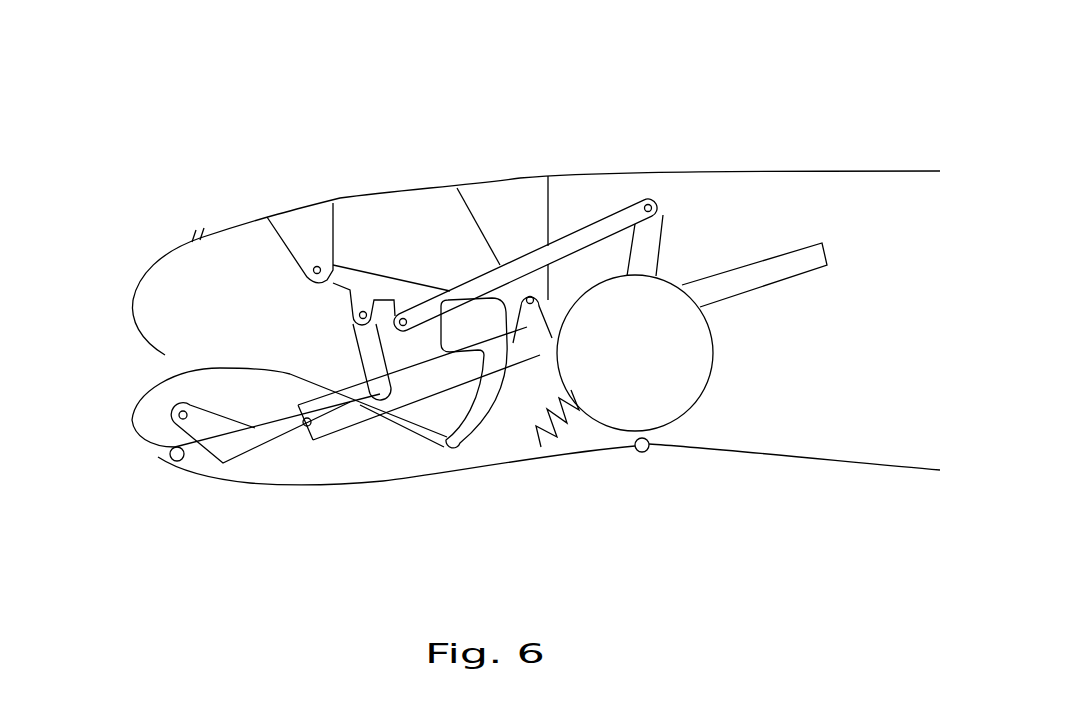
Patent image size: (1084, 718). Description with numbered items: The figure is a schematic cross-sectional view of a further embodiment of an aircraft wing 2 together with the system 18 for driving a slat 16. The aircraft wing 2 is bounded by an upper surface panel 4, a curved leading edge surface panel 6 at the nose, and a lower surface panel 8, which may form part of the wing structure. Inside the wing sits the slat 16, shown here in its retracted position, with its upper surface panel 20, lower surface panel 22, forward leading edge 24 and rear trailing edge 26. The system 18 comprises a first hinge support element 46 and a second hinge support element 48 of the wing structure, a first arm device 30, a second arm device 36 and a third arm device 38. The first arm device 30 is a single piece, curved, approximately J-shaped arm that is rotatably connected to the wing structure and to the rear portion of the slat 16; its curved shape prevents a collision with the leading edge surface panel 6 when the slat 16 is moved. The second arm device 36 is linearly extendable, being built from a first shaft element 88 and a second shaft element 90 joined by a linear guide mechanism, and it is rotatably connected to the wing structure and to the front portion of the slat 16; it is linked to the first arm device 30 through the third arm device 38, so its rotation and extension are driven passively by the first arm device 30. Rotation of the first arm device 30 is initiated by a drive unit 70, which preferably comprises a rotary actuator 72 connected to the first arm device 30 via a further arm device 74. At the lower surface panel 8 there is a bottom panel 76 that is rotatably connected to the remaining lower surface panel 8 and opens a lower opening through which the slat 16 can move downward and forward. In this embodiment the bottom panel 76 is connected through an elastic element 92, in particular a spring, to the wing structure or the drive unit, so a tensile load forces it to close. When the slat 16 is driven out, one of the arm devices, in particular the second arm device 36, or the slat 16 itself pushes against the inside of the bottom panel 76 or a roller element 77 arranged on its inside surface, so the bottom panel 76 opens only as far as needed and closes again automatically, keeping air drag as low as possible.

The aircraft wing 2 is at (884, 98).
The upper surface panel 4 is at (726, 166).
The leading edge surface panel 6 is at (130, 308).
The lower surface panel 8 is at (794, 466).
The slat 16 is at (253, 374).
The system for driving the slat 18 is at (388, 222).
The upper surface panel of the slat 20 is at (209, 362).
The lower surface panel of the slat 22 is at (264, 432).
The forward leading edge 24 is at (128, 425).
The rear trailing edge 26 is at (441, 445).
The first arm device 30 is at (454, 447).
The second arm device 36 is at (351, 442).
The third arm device 38 is at (357, 349).
The first hinge support element 46 is at (306, 218).
The second hinge support element 48 is at (504, 192).
The drive unit 70 is at (699, 256).
The rotary actuator 72 is at (718, 338).
The further arm device 74 is at (617, 202).
The bottom panel 76 is at (383, 484).
The roller element 77 is at (167, 465).
The first shaft element 88 is at (516, 385).
The second shaft element 90 is at (827, 242).
The elastic element 92 is at (563, 441).